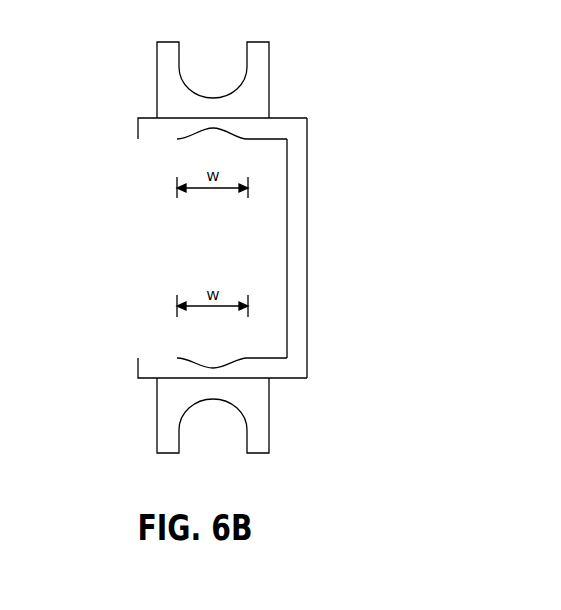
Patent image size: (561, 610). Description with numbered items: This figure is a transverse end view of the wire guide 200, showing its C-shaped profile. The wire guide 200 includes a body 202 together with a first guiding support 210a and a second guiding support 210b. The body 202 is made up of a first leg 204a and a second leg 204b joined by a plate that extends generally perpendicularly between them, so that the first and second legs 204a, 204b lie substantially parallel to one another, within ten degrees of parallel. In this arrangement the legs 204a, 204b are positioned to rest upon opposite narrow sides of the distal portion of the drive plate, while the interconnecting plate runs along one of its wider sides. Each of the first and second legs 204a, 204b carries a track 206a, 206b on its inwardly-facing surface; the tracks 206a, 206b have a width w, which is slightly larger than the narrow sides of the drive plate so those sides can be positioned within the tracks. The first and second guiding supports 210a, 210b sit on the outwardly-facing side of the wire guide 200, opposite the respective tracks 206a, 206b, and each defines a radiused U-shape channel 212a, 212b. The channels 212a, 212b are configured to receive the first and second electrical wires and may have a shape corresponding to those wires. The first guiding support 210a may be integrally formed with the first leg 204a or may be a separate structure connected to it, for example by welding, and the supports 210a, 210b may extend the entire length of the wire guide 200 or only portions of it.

The wire guide 200 is at (365, 90).
The body 202 is at (307, 235).
The first leg 204a is at (138, 132).
The second leg 204b is at (138, 370).
The track 206a is at (213, 131).
The track 206b is at (212, 366).
The first guiding support 210a is at (258, 42).
The second guiding support 210b is at (257, 455).
The U-shape channel 212a is at (215, 97).
The U-shape channel 212b is at (215, 400).